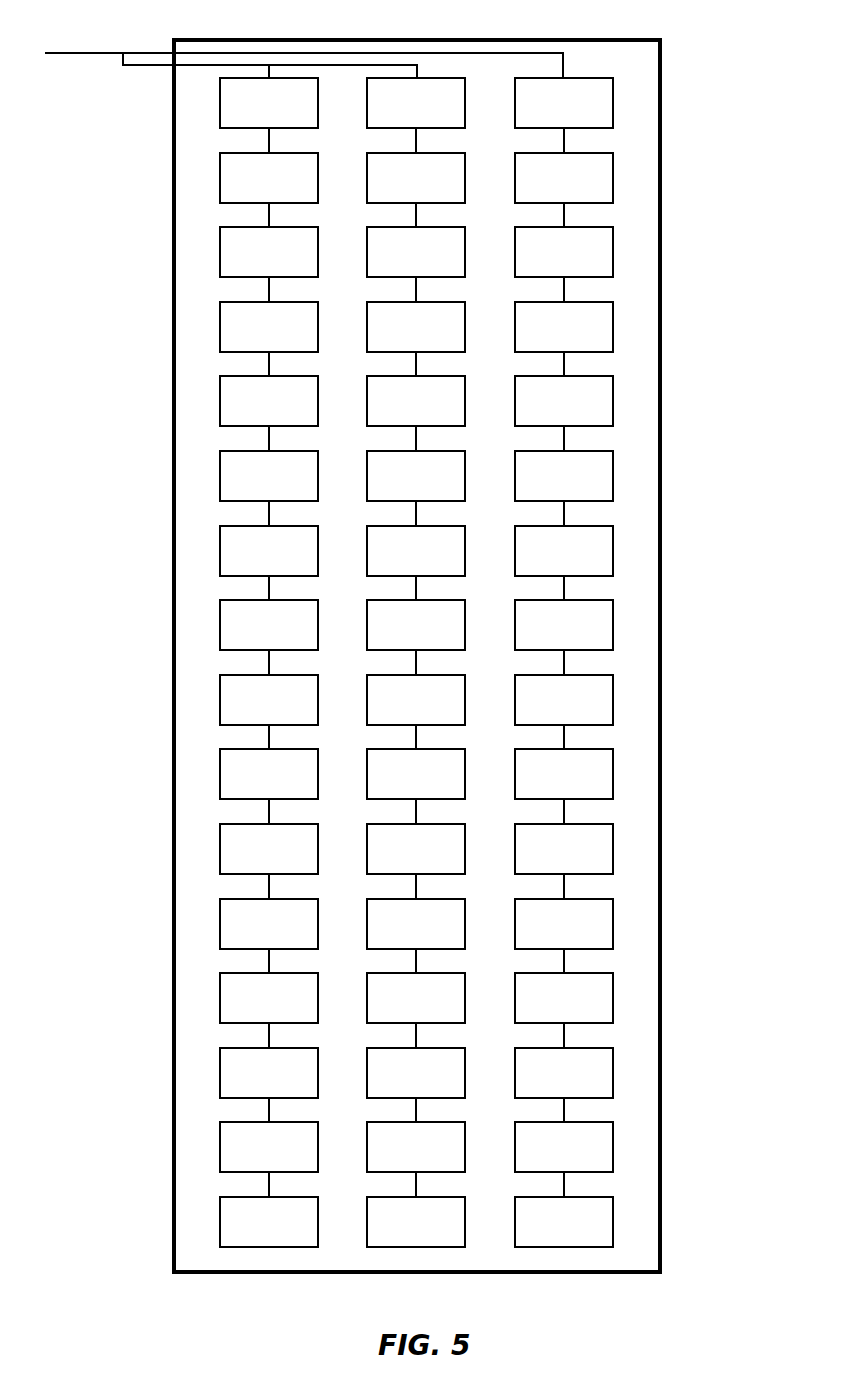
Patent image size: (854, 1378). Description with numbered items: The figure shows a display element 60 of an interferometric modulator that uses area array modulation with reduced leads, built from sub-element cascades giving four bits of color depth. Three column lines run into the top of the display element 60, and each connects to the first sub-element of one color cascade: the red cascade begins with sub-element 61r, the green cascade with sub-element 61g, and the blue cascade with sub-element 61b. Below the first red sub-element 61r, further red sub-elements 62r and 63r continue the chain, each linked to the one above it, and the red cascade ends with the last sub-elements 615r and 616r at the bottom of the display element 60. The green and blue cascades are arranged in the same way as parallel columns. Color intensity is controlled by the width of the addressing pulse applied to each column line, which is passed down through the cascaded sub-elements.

The display element 60 is at (660, 336).
The first red sub-element 61r is at (220, 97).
The second red sub-element 62r is at (220, 173).
The third red sub-element 63r is at (220, 247).
The fifteenth red sub-element 615r is at (220, 1133).
The sixteenth red sub-element 616r is at (220, 1210).
The first green sub-element 61g is at (441, 78).
The first blue sub-element 61b is at (588, 78).